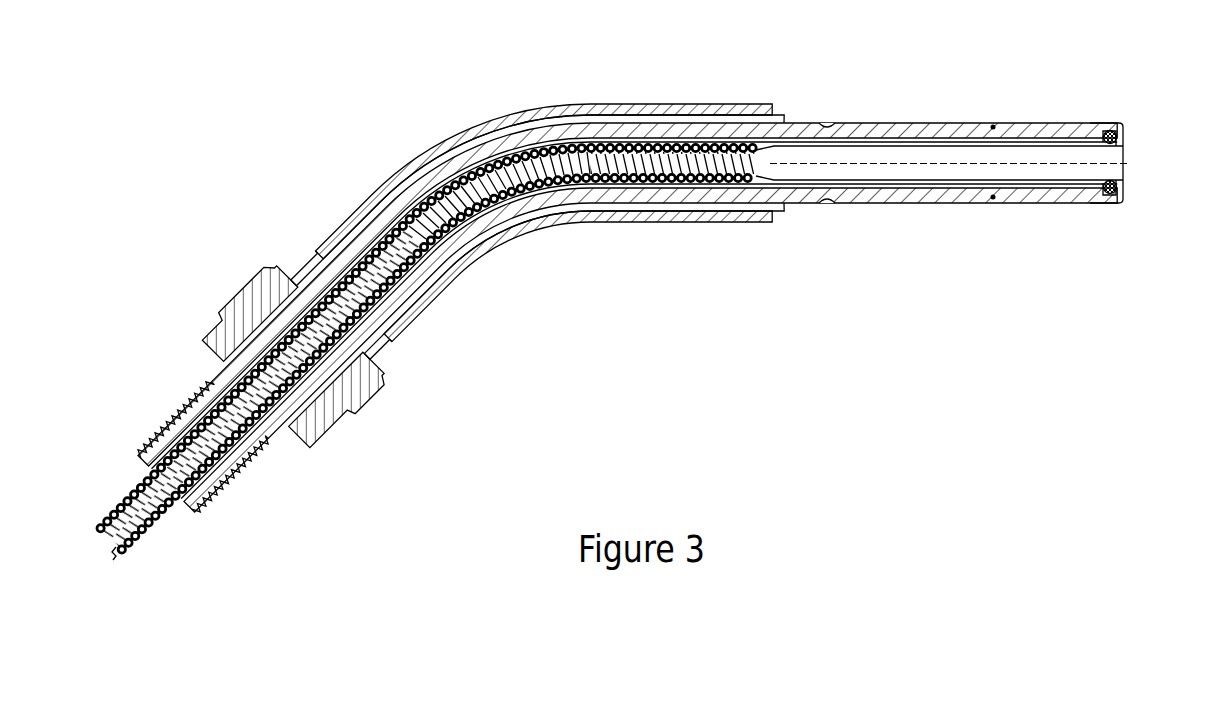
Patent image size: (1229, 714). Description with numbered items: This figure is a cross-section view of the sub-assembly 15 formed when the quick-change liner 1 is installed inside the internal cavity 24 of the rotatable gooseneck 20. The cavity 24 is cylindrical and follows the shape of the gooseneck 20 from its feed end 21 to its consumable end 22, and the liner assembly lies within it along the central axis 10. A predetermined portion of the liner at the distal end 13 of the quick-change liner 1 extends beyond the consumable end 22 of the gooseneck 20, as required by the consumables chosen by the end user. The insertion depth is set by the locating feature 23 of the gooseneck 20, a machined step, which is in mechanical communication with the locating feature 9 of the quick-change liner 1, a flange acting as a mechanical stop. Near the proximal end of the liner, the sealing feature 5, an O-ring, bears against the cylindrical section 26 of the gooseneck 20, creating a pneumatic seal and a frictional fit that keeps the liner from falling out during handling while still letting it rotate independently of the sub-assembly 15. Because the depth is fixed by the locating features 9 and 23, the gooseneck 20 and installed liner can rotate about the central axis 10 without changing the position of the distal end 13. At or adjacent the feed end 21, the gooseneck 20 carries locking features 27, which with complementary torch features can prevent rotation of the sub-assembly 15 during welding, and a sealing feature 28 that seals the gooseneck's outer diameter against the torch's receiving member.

The quick-change liner 1 is at (397, 348).
The sealing feature 5 is at (1138, 187).
The locating feature 9 is at (626, 319).
The central axis 10 is at (971, 150).
The distal end 13 is at (94, 577).
The sub-assembly 15 is at (613, 321).
The gooseneck 20 is at (539, 223).
The feed end 21 is at (1110, 119).
The consumable end 22 is at (225, 356).
The locating feature 23 is at (1095, 133).
The internal cavity 24 is at (537, 223).
The cylindrical section 26 is at (1133, 140).
The locking features 27 is at (851, 136).
The sealing feature 28 is at (950, 201).